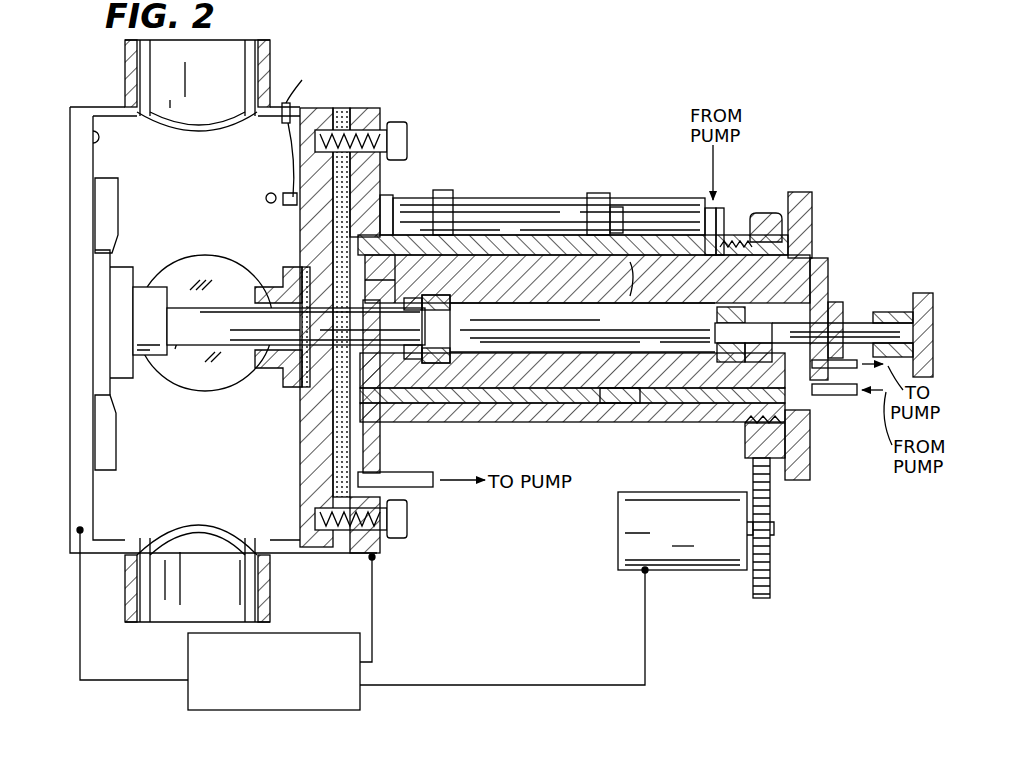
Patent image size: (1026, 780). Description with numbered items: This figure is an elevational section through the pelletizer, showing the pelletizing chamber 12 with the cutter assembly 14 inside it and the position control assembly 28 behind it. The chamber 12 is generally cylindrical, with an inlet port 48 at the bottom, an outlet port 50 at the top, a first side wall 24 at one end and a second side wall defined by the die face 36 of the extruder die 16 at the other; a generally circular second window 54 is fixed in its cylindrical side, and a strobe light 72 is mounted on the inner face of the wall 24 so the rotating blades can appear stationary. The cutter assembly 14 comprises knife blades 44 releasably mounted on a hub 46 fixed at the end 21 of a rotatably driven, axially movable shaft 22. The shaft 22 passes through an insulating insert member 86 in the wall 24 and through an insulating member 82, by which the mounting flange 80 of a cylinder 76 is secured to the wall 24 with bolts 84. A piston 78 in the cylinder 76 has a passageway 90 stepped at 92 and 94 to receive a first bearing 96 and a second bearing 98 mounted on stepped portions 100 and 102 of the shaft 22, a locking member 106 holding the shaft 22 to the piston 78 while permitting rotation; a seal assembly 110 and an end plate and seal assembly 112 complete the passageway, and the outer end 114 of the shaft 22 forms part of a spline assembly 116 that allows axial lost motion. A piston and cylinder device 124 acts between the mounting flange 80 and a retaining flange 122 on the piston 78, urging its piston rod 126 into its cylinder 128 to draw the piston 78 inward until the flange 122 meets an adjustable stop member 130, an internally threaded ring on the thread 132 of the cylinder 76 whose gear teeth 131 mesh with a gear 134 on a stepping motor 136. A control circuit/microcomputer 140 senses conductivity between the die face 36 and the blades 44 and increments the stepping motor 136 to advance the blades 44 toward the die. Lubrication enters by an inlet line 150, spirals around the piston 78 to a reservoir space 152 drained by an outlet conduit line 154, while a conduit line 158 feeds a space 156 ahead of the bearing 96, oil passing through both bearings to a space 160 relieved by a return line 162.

The pelletizing chamber 12 is at (118, 133).
The cutter assembly 14 is at (128, 247).
The extruder die 16 is at (80, 165).
The end of shaft 21 is at (178, 350).
The shaft 22 is at (225, 332).
The wall 24 is at (368, 477).
The position control assembly 28 is at (495, 180).
The die face 36 is at (94, 136).
The knife blades 44 is at (108, 200).
The hub 46 is at (147, 300).
The inlet port 48 is at (128, 580).
The outlet port 50 is at (130, 90).
The second window 54 is at (222, 265).
The strobe light 72 is at (272, 193).
The cylinder 76 is at (567, 235).
The piston 78 is at (558, 402).
The mounting flange 80 is at (375, 182).
The insulating member 82 is at (348, 197).
The bolts 84 is at (395, 132).
The insulating insert member 86 is at (337, 390).
The passageway 90 is at (630, 307).
The stepped portion of passageway 92 is at (410, 285).
The stepped portion of passageway 94 is at (800, 280).
The first bearing 96 is at (455, 350).
The second bearing 98 is at (723, 362).
The stepped portion of shaft 100 is at (493, 332).
The stepped portion of shaft 102 is at (828, 280).
The locking member 106 is at (745, 395).
The seal assembly 110 is at (337, 430).
The end plate and seal assembly 112 is at (852, 330).
The outer end of shaft 114 is at (863, 317).
The spline assembly 116 is at (920, 295).
The retaining flange 122 is at (808, 200).
The piston and cylinder device 124 is at (513, 207).
The piston rod 126 is at (690, 227).
The cylinder of piston and cylinder device 128 is at (530, 215).
The adjustable stop member 130 is at (767, 217).
The gear teeth 131 is at (750, 455).
The thread 132 is at (735, 240).
The gear 134 is at (773, 552).
The stepping motor 136 is at (698, 572).
The control circuit/microcomputer 140 is at (340, 712).
The inlet line 150 is at (718, 233).
The reservoir space 152 is at (433, 372).
The outlet conduit line 154 is at (423, 488).
The space 156 is at (413, 360).
The conduit line 158 is at (620, 405).
The space 160 is at (812, 425).
The return line 162 is at (853, 368).